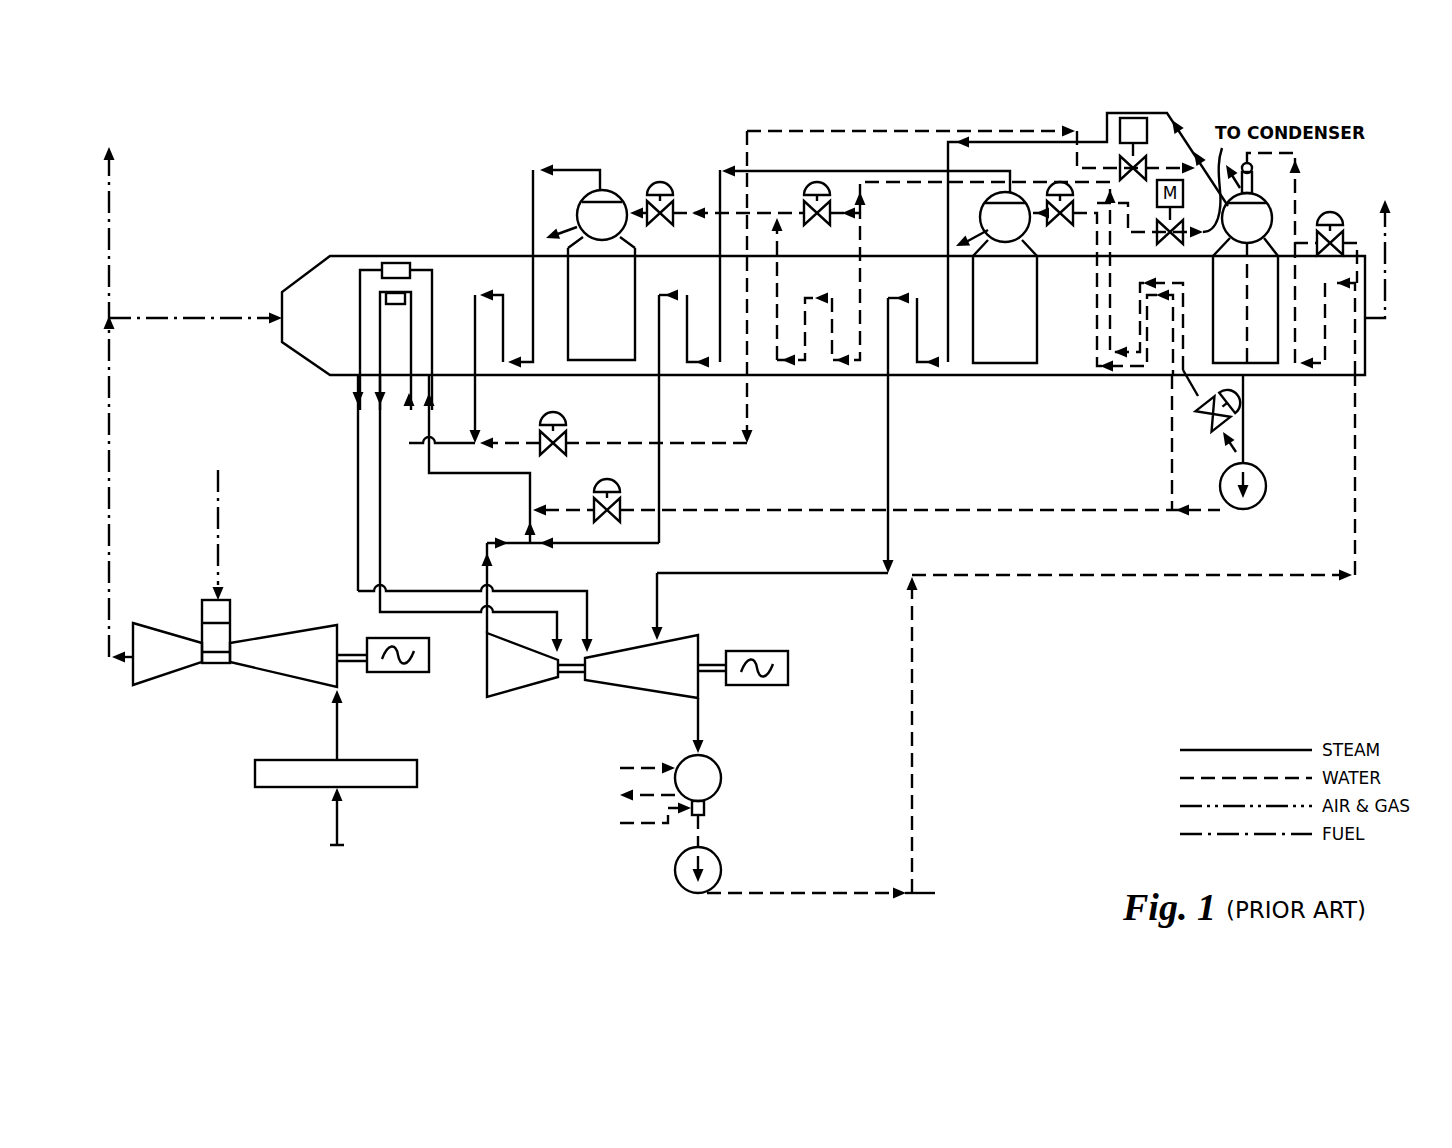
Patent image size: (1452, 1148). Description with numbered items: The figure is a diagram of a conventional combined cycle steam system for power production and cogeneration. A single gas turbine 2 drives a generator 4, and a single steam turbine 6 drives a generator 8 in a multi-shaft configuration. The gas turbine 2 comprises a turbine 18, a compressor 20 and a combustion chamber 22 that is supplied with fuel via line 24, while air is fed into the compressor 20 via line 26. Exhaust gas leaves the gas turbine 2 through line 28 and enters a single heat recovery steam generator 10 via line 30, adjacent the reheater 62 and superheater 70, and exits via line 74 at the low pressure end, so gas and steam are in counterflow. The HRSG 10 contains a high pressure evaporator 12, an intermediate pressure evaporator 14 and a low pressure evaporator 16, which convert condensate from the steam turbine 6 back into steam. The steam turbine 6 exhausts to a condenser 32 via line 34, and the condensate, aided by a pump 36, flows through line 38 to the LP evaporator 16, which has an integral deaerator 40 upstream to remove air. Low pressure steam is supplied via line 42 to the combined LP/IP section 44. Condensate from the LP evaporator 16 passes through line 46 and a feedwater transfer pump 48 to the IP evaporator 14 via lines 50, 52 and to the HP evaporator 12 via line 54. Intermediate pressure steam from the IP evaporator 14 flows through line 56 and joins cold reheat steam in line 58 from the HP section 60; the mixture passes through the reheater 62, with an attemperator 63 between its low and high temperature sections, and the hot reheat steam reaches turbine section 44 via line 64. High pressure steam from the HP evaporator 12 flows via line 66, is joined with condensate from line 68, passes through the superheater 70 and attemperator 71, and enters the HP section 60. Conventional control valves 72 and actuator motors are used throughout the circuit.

The gas turbine 2 is at (241, 658).
The generator 4 is at (386, 640).
The steam turbine 6 is at (568, 661).
The generator 8 is at (776, 651).
The heat recovery steam generator 10 is at (300, 373).
The high pressure evaporator 12 is at (612, 364).
The intermediate pressure evaporator 14 is at (1022, 364).
The low pressure evaporator 16 is at (1250, 366).
The turbine 18 is at (183, 642).
The compressor 20 is at (280, 640).
The combustion chamber 22 is at (206, 598).
The fuel line 24 is at (220, 528).
The air line 26 is at (340, 830).
The exhaust gas line 28 is at (109, 490).
The exhaust gas line to HRSG 30 is at (196, 318).
The condenser 32 is at (722, 780).
The exhaust steam line 34 is at (700, 726).
The pump 36 is at (720, 878).
The condensate line 38 is at (995, 577).
The deaerator 40 is at (1253, 182).
The low pressure steam line 42 is at (1095, 138).
The combined LP/IP turbine section 44 is at (675, 640).
The condensate line 46 is at (1246, 444).
The feedwater transfer pump 48 is at (1268, 497).
The feedwater line 50 is at (1212, 511).
The feedwater line 52 is at (1170, 416).
The feedwater line 54 is at (1192, 366).
The intermediate pressure steam line 56 is at (886, 174).
The cold reheat steam line 58 is at (484, 562).
The HP section of steam turbine 60 is at (520, 682).
The reheater 62 is at (352, 303).
The attemperator 63 is at (402, 262).
The hot reheat steam line 64 is at (480, 476).
The high pressure steam line 66 is at (598, 172).
The condensate line 68 is at (700, 443).
The superheater 70 is at (440, 306).
The attemperator 71 is at (395, 305).
The flow bypass and control valves 72 is at (808, 196).
The exhaust gas exit line 74 is at (1386, 278).